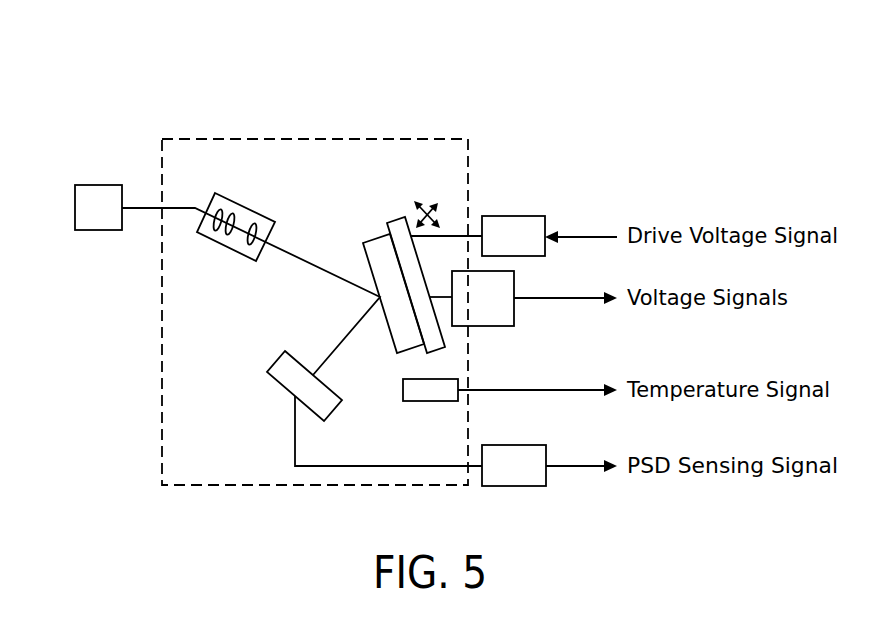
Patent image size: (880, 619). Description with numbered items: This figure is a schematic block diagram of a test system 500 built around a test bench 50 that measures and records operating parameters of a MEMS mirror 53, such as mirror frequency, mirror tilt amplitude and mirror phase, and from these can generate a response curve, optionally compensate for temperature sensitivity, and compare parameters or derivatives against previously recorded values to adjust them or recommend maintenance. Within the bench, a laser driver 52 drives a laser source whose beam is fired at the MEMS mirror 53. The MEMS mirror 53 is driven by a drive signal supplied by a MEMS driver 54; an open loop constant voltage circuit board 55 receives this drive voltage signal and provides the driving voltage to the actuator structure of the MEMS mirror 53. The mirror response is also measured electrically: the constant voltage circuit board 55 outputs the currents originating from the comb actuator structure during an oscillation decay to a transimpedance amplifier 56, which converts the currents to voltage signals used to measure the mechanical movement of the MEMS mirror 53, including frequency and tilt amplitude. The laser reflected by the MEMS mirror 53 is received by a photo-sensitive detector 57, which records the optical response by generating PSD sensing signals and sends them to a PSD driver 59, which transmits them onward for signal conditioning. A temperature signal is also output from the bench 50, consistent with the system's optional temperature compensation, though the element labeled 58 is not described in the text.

The test system 500 is at (100, 57).
The test bench 50 is at (302, 139).
The laser driver 52 is at (99, 185).
The MEMS mirror 53 is at (371, 241).
The MEMS driver 54 is at (513, 216).
The open loop constant voltage circuit board 55 is at (396, 223).
The transimpedance amplifier 56 is at (514, 284).
The photo-sensitive detector 57 is at (245, 207).
The temperature sensor 58 is at (431, 401).
The PSD driver 59 is at (512, 445).